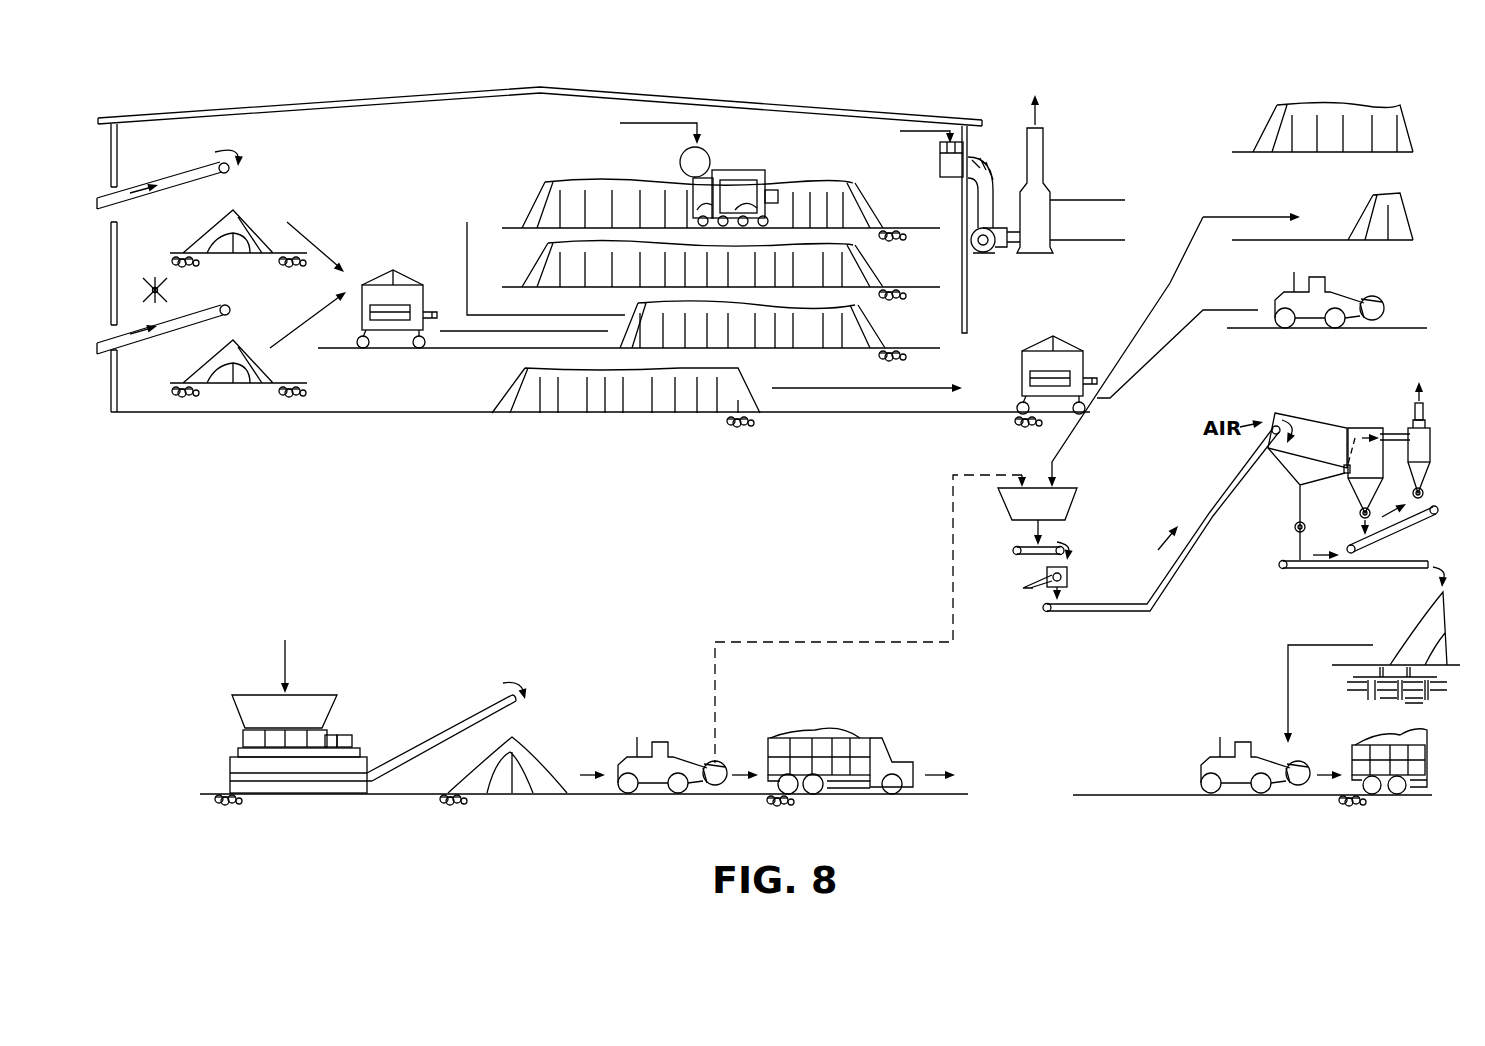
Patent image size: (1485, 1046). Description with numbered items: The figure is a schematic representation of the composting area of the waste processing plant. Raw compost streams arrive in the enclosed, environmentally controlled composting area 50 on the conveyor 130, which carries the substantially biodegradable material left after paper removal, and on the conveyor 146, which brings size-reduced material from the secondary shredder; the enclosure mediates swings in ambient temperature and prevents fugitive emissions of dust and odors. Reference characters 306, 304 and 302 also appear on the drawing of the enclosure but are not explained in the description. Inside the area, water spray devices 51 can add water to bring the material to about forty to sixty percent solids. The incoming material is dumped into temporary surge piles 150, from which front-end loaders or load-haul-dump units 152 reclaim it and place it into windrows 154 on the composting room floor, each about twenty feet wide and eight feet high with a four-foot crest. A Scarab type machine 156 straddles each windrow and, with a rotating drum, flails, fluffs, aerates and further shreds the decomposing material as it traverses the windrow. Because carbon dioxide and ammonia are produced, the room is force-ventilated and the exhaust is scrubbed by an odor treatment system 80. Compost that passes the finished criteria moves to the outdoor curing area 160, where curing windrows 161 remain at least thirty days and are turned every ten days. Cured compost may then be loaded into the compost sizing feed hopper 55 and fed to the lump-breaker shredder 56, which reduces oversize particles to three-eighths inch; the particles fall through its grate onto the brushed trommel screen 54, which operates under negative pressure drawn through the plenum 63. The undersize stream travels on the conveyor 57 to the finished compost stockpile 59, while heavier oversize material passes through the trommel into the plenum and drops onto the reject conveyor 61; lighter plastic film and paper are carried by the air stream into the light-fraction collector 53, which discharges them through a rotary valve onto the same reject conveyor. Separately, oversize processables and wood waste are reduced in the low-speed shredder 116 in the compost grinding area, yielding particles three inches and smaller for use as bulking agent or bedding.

The roof 306 is at (398, 96).
The end wall 304 is at (967, 310).
The floor 302 is at (343, 402).
The composting area 50 is at (412, 159).
The conveyor 130 is at (162, 185).
The conveyor 146 is at (120, 345).
The water spray devices 51 is at (150, 288).
The temporary piles 150 is at (240, 218).
The load-haul-dump units 152 is at (420, 283).
The windrows 154 is at (567, 181).
The Scarab type machine 156 is at (730, 168).
The odor treatment system 80 is at (929, 183).
The outdoor curing area 160 is at (1153, 191).
The curing windrows 161 is at (1357, 218).
The compost sizing feed hopper 55 is at (1077, 507).
The lump-breaker shredder 56 is at (1068, 580).
The brushed trommel screen 54 is at (1290, 417).
The plenum 63 is at (1362, 427).
The light-fraction collector 53 is at (1410, 423).
The reject conveyor 61 is at (1382, 535).
The conveyor 57 is at (1300, 570).
The finished compost stockpile 59 is at (1418, 632).
The low-speed shredder 116 is at (333, 715).